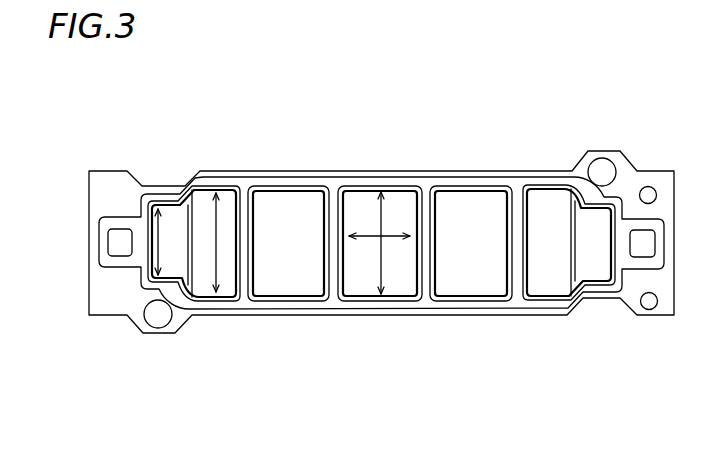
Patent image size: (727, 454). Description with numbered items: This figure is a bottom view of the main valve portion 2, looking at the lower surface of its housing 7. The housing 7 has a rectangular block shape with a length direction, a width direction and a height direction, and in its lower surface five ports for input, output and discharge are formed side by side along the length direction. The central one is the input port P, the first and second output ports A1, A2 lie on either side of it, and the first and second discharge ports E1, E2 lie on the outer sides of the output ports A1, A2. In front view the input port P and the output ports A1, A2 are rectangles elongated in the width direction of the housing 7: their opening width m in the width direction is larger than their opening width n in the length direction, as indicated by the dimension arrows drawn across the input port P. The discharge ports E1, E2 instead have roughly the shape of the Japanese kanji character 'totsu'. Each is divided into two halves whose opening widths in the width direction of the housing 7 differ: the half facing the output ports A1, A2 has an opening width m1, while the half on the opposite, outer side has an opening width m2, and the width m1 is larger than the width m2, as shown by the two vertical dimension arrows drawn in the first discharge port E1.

The main valve portion 2 is at (468, 128).
The housing 7 is at (523, 172).
The first discharge port E1 is at (198, 281).
The first output port A1 is at (287, 274).
The input port P is at (398, 278).
The second output port A2 is at (464, 280).
The second discharge port E2 is at (542, 280).
The opening width of the one half of the discharge port m1 is at (217, 228).
The opening width of the other half of the discharge port m2 is at (158, 228).
The opening width in the length direction n is at (372, 234).
The opening width in the width direction m is at (383, 228).